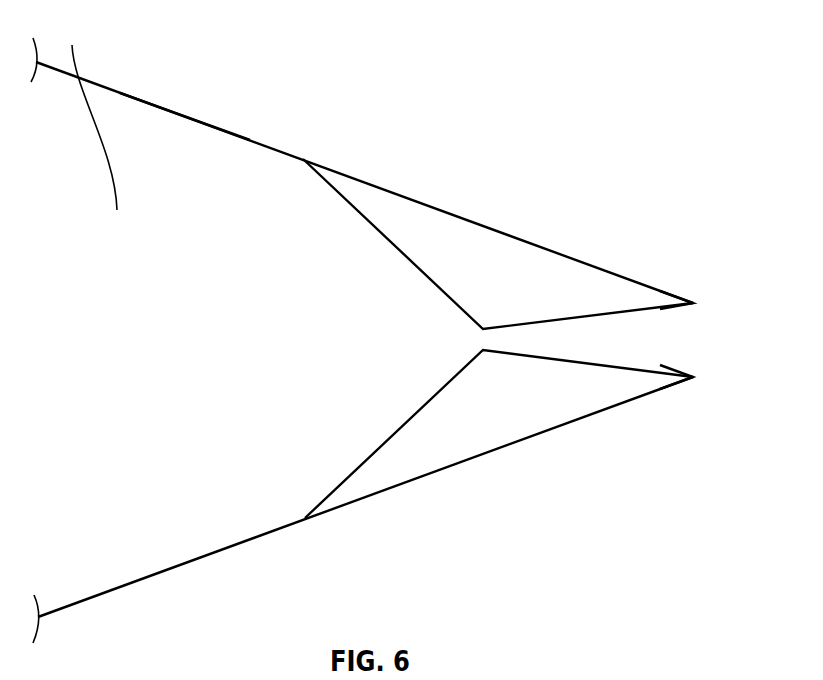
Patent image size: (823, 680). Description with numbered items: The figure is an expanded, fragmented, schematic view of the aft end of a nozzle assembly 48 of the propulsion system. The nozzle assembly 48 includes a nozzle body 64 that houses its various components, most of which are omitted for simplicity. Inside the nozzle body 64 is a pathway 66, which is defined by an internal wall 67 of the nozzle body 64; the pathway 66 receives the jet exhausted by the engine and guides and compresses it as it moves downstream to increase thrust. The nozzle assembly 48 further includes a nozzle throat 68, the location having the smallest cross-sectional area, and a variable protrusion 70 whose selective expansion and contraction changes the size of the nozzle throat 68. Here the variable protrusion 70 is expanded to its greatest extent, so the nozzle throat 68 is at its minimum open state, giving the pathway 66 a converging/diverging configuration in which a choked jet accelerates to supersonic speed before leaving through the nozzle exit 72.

The nozzle assembly 48 is at (378, 75).
The nozzle body 64 is at (207, 123).
The pathway 66 is at (88, 113).
The internal wall 67 is at (170, 113).
The nozzle throat 68 is at (487, 338).
The variable protrusion 70 is at (477, 302).
The nozzle exit 72 is at (688, 333).